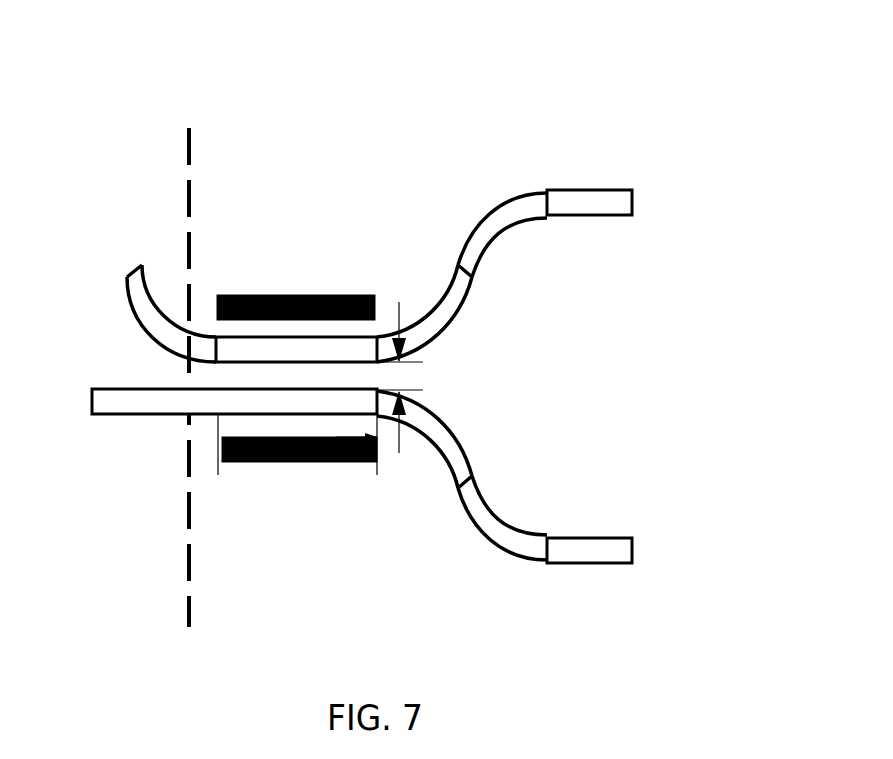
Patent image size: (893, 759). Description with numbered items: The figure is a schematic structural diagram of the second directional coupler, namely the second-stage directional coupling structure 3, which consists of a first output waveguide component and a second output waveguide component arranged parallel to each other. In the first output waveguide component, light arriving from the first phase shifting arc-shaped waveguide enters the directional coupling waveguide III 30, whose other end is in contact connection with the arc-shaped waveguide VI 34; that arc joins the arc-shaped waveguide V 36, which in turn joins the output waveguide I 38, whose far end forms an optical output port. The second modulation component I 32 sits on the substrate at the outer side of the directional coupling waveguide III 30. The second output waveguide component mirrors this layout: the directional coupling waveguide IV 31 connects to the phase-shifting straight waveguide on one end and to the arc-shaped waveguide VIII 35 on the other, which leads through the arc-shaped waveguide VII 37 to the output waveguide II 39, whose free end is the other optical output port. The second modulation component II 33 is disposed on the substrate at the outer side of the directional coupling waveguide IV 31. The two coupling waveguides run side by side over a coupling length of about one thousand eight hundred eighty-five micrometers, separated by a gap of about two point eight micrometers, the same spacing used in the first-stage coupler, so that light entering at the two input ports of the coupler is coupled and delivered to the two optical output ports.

The second-stage directional coupling structure 3 is at (374, 333).
The directional coupling waveguide III 30 is at (250, 352).
The directional coupling waveguide IV 31 is at (237, 406).
The second modulation component I 32 is at (312, 296).
The second modulation component II 33 is at (317, 461).
The arc-shaped waveguide VI 34 is at (436, 313).
The arc-shaped waveguide VIII 35 is at (429, 426).
The arc-shaped waveguide V 36 is at (504, 213).
The arc-shaped waveguide VII 37 is at (499, 529).
The output waveguide I 38 is at (590, 201).
The output waveguide II 39 is at (590, 552).